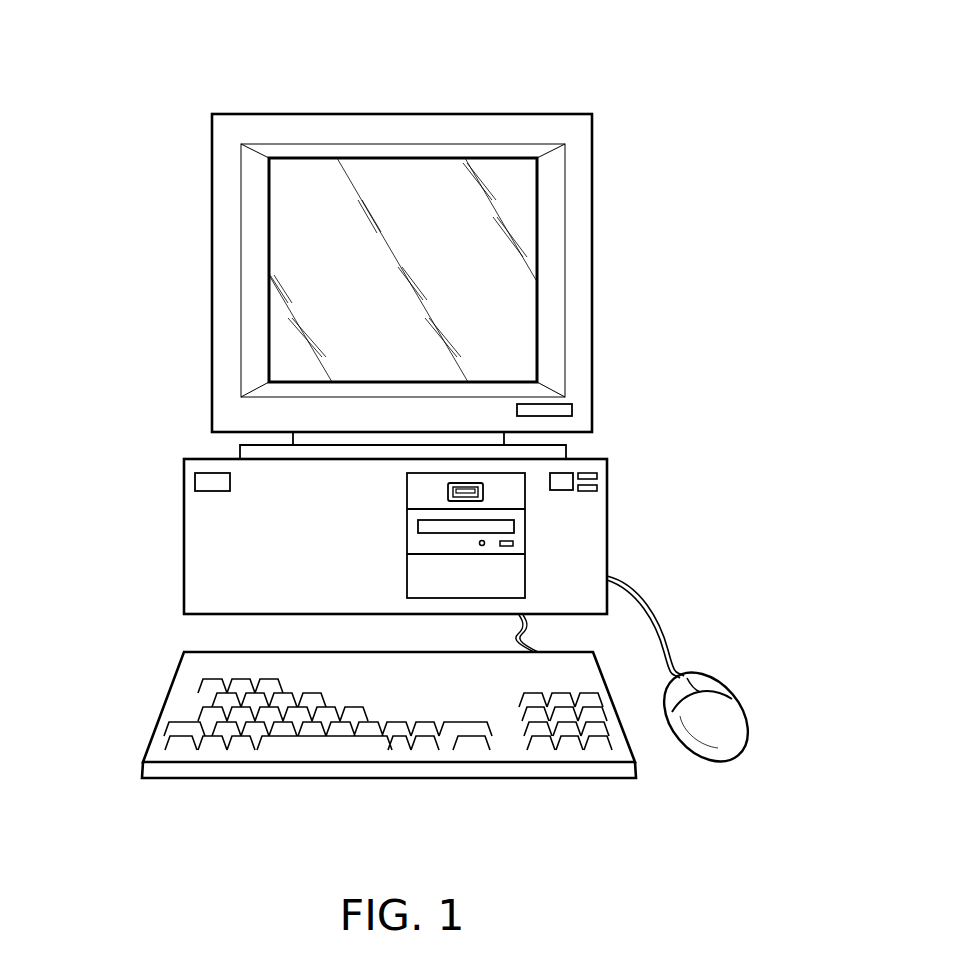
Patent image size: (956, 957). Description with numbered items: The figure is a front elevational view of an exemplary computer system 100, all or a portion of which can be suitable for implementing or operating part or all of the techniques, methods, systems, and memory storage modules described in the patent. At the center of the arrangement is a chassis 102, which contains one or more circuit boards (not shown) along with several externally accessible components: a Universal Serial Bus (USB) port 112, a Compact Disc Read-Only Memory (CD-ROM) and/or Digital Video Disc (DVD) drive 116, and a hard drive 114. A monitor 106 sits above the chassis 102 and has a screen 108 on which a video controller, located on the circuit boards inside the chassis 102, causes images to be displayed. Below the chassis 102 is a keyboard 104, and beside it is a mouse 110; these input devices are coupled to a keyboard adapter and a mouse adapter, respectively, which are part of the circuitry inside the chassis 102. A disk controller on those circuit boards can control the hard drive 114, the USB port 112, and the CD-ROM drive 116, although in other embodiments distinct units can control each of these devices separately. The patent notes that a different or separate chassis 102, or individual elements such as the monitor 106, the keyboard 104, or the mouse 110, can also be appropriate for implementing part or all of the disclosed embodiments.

The computer system 100 is at (583, 90).
The chassis 102 is at (184, 541).
The keyboard 104 is at (167, 700).
The monitor 106 is at (287, 113).
The screen 108 is at (317, 276).
The mouse 110 is at (725, 707).
The Universal Serial Bus (USB) port 112 is at (485, 487).
The hard drive 114 is at (515, 574).
The Compact Disc Read-Only Memory (CD-ROM) and/or Digital Video Disc (DVD) drive 116 is at (515, 534).